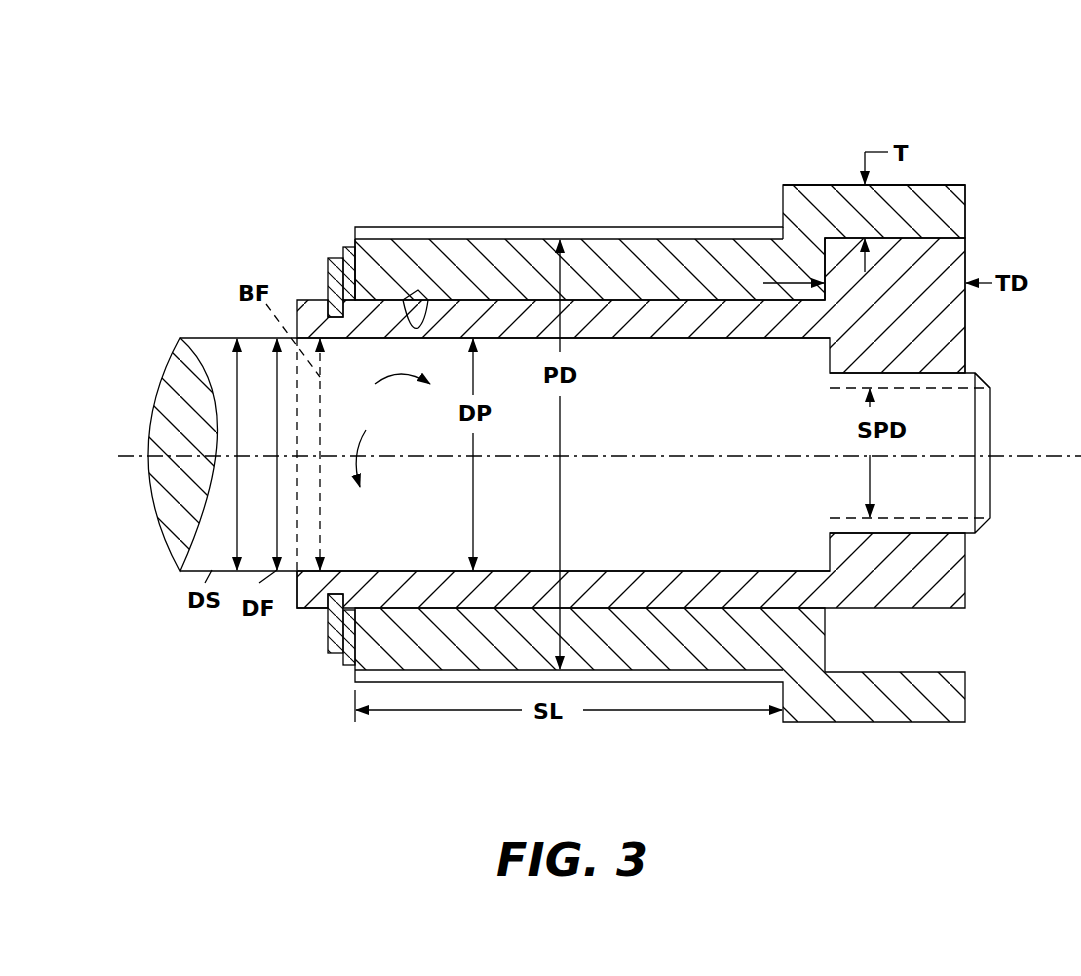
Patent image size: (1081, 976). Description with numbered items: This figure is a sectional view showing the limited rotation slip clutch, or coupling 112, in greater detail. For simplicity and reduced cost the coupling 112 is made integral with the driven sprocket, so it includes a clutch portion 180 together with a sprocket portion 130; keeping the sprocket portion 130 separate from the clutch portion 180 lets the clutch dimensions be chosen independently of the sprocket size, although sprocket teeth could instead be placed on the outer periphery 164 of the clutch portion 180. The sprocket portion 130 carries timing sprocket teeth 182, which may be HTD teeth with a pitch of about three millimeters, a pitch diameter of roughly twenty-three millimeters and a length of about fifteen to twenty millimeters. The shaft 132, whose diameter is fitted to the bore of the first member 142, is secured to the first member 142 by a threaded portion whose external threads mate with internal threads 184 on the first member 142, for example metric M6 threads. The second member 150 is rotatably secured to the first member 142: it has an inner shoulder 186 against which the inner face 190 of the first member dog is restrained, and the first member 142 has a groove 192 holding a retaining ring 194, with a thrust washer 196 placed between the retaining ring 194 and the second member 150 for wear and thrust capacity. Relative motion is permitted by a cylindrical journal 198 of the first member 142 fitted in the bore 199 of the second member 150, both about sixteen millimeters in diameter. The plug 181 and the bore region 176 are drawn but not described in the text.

The coupling 112 is at (982, 111).
The sprocket portion 130 is at (504, 222).
The shaft 132 is at (242, 572).
The first member 142 is at (953, 576).
The second member 150 is at (878, 723).
The outer periphery 164 is at (920, 184).
The bore 176 is at (373, 445).
The clutch portion 180 is at (955, 182).
The plug 181 is at (990, 493).
The timing sprocket teeth 182 is at (952, 363).
The internal threads 184 is at (905, 380).
The inner shoulder 186 is at (831, 240).
The inner face 190 is at (822, 252).
The groove 192 is at (357, 571).
The retaining ring 194 is at (330, 652).
The thrust washer 196 is at (340, 666).
The cylindrical journal 198 is at (367, 297).
The bore 199 is at (425, 325).